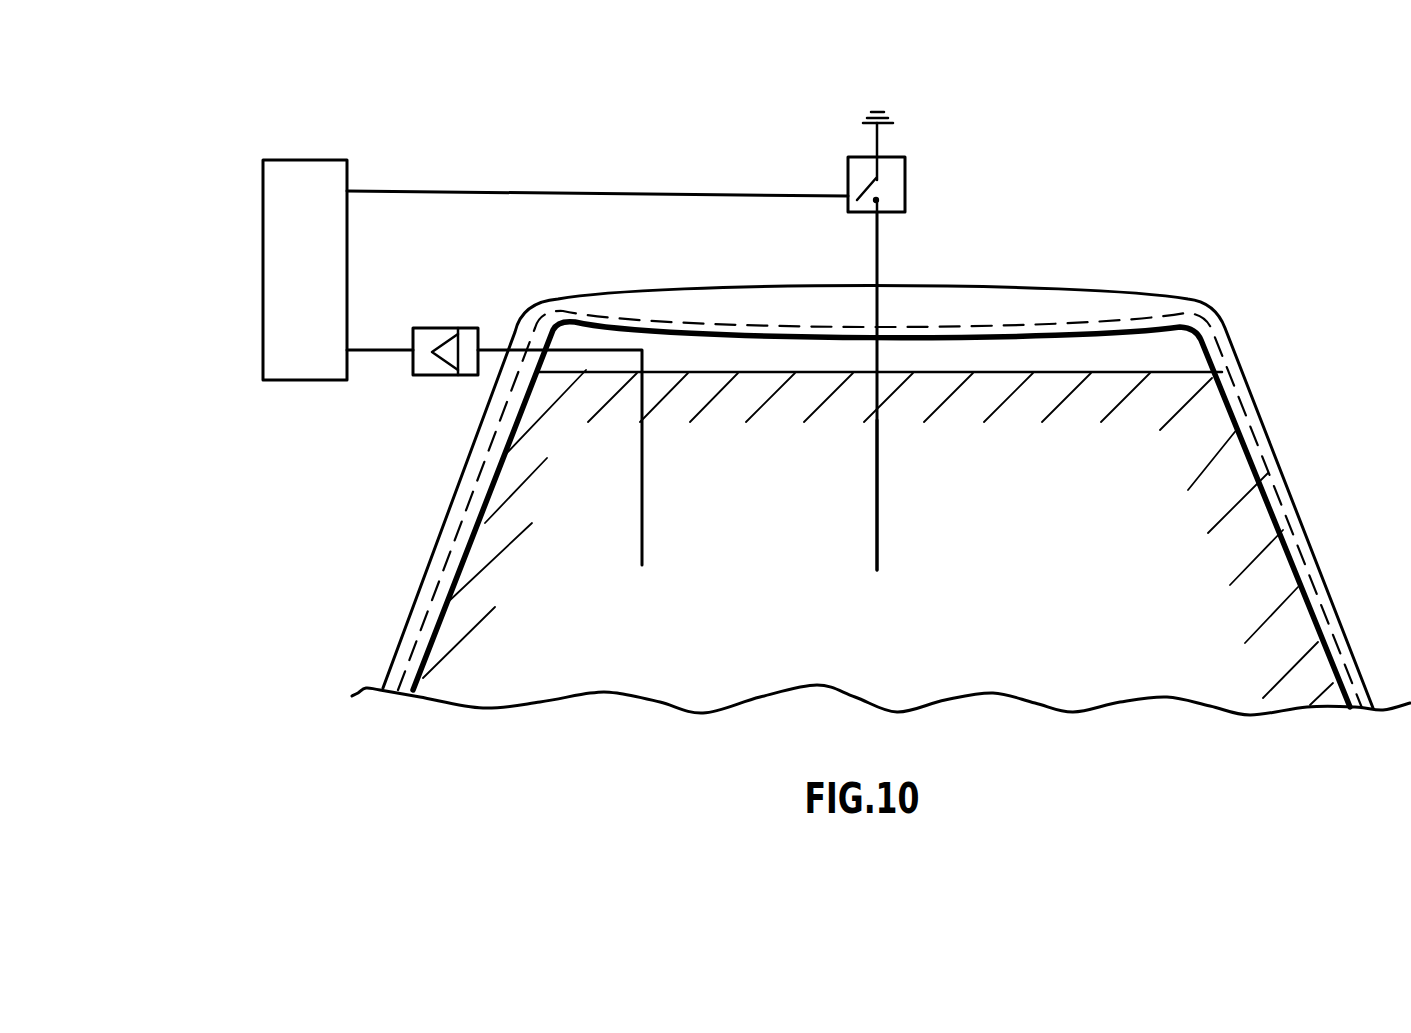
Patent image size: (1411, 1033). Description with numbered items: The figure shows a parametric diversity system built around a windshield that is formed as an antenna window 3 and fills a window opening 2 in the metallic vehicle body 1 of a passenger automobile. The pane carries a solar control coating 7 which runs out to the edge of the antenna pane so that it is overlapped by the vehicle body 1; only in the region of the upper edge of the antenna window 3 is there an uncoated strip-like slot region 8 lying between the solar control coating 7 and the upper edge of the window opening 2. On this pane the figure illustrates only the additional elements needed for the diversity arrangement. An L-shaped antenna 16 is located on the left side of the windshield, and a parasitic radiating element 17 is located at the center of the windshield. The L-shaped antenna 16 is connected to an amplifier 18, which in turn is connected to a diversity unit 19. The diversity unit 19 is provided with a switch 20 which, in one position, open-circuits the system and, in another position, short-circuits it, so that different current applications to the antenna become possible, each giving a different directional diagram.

The vehicle body 1 is at (1192, 300).
The window opening 2 is at (1255, 510).
The antenna window 3 is at (871, 427).
The solar control coating 7 is at (1143, 485).
The slot region 8 is at (1112, 347).
The L-shaped antenna 16 is at (642, 533).
The parasitic radiating element 17 is at (877, 525).
The amplifier 18 is at (438, 328).
The diversity unit 19 is at (278, 278).
The switch 20 is at (905, 180).